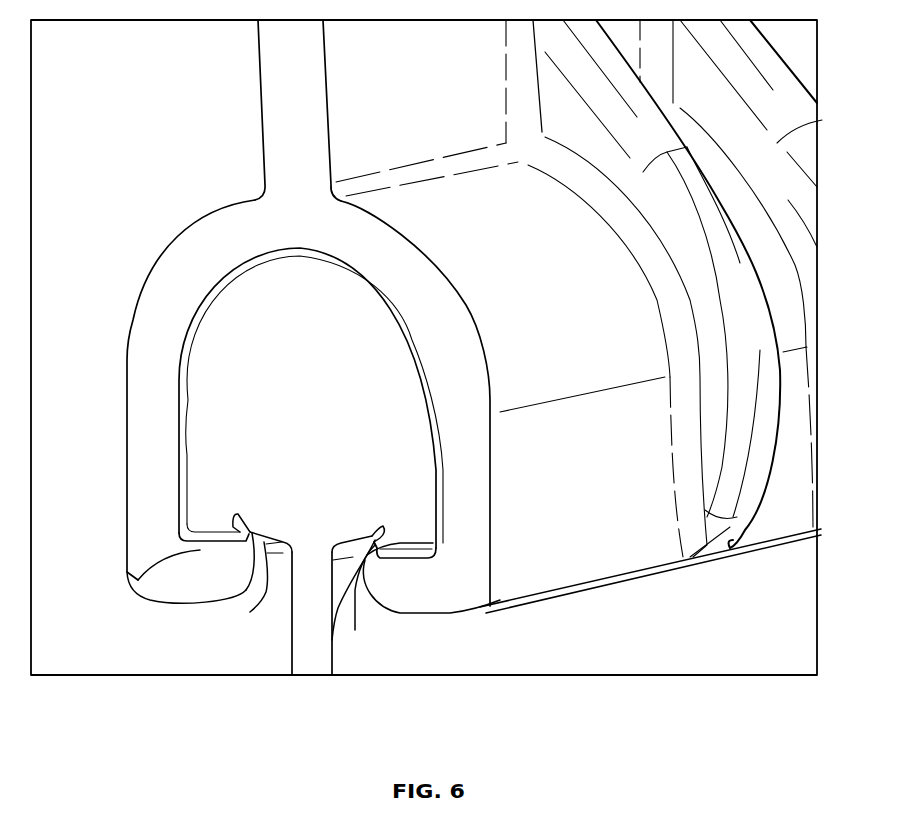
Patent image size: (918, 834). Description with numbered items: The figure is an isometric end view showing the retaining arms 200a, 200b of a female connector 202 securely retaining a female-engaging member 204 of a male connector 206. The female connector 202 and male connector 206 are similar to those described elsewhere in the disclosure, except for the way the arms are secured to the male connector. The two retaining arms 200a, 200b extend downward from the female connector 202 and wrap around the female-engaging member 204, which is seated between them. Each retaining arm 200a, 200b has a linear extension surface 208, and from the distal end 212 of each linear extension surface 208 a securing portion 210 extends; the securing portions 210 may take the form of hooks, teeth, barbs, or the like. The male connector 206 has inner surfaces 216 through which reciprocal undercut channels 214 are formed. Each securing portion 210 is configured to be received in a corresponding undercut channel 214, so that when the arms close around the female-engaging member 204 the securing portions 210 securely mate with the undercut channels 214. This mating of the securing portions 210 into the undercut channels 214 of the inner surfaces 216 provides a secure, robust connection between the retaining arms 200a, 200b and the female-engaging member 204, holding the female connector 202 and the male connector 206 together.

The female connector 202 is at (246, 99).
The retaining arm 200a is at (127, 333).
The retaining arm 200b is at (489, 375).
The female-engaging member 204 is at (227, 443).
The male connector 206 is at (297, 617).
The linear extension surface 208 is at (147, 581).
The securing portion 210 is at (292, 587).
The distal end 212 is at (250, 612).
The undercut channel 214 is at (239, 516).
The inner surface 216 is at (222, 531).